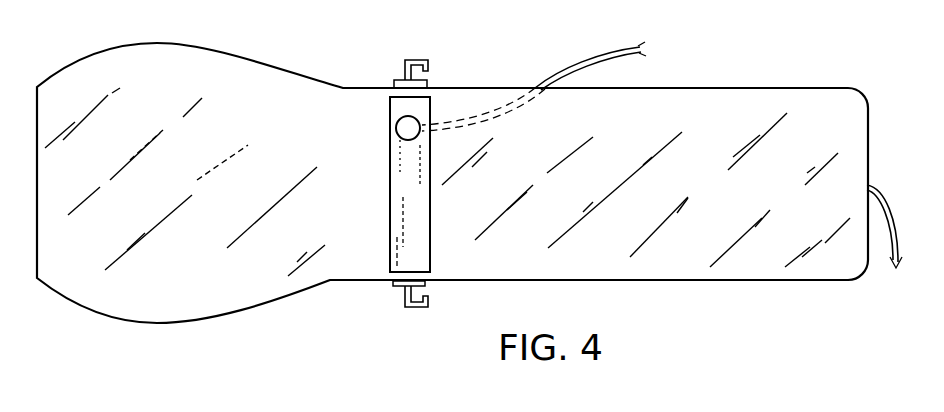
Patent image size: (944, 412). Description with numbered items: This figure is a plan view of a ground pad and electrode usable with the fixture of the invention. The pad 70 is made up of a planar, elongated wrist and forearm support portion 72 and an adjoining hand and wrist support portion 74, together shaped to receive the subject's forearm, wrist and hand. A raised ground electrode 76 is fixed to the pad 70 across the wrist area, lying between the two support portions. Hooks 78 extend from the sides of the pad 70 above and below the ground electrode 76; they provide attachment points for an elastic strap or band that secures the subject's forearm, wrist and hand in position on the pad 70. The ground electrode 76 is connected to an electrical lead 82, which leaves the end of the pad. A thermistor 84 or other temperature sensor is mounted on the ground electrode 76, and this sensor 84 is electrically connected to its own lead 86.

The pad 70 is at (316, 288).
The wrist and forearm support portion 72 is at (718, 152).
The hand and wrist support portion 74 is at (221, 150).
The ground electrode 76 is at (412, 215).
The hooks 78 is at (417, 60).
The electrical lead 82 is at (888, 242).
The thermistor 84 is at (416, 119).
The lead 86 is at (594, 58).